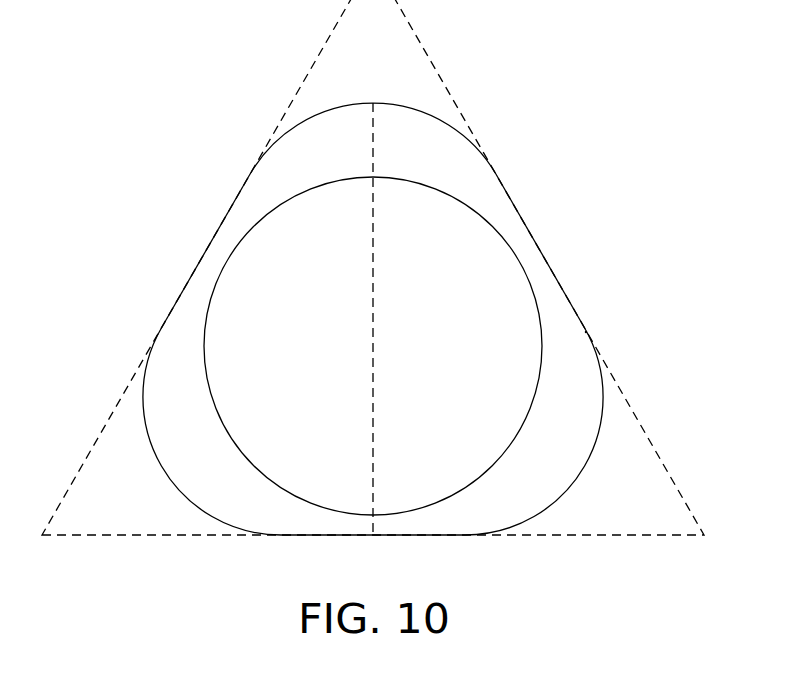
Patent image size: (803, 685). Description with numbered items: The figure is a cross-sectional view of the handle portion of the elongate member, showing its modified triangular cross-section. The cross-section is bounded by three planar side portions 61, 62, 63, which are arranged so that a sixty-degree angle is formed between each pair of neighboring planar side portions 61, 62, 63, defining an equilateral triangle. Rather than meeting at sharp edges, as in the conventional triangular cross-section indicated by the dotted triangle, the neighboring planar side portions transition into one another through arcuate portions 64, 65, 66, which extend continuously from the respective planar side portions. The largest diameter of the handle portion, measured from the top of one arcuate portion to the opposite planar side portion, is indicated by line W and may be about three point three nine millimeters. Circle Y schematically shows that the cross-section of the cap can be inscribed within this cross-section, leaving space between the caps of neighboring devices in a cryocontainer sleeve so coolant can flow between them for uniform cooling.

The planar side portion 61 is at (208, 250).
The planar side portion 62 is at (535, 250).
The planar side portion 63 is at (280, 536).
The arcuate portion 64 is at (360, 102).
The arcuate portion 65 is at (552, 503).
The arcuate portion 66 is at (173, 483).
The line W (largest diameter) W is at (373, 287).
The circle Y is at (585, 337).